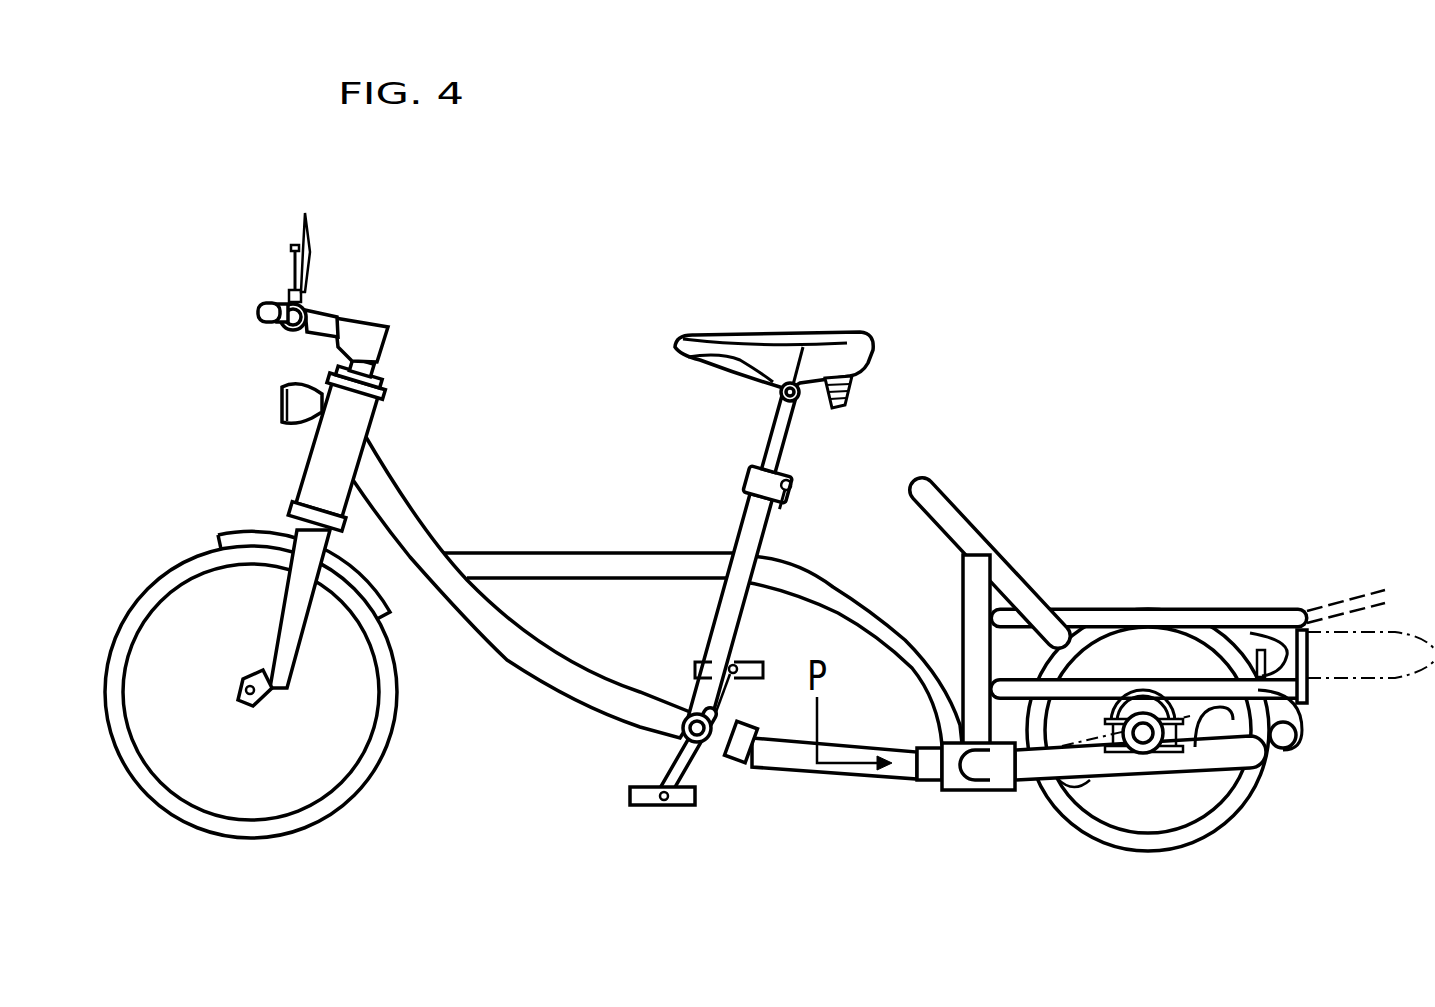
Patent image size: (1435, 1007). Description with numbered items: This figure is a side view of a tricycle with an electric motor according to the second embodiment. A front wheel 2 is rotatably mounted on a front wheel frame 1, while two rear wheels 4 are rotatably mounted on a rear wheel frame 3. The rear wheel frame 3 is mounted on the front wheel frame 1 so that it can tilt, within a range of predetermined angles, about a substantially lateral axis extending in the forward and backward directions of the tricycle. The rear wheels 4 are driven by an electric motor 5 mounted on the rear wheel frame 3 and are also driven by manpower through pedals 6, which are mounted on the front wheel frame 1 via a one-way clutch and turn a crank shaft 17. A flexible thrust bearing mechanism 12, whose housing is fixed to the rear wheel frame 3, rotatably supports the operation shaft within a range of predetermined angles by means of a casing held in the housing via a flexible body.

The front wheel frame 1 is at (407, 492).
The front wheel 2 is at (222, 548).
The rear wheel frame 3 is at (1296, 747).
The rear wheel 4 is at (1233, 807).
The electric motor 5 is at (1263, 748).
The pedal 6 is at (632, 792).
The flexible thrust bearing mechanism 12 is at (975, 790).
The crank shaft 17 is at (708, 745).